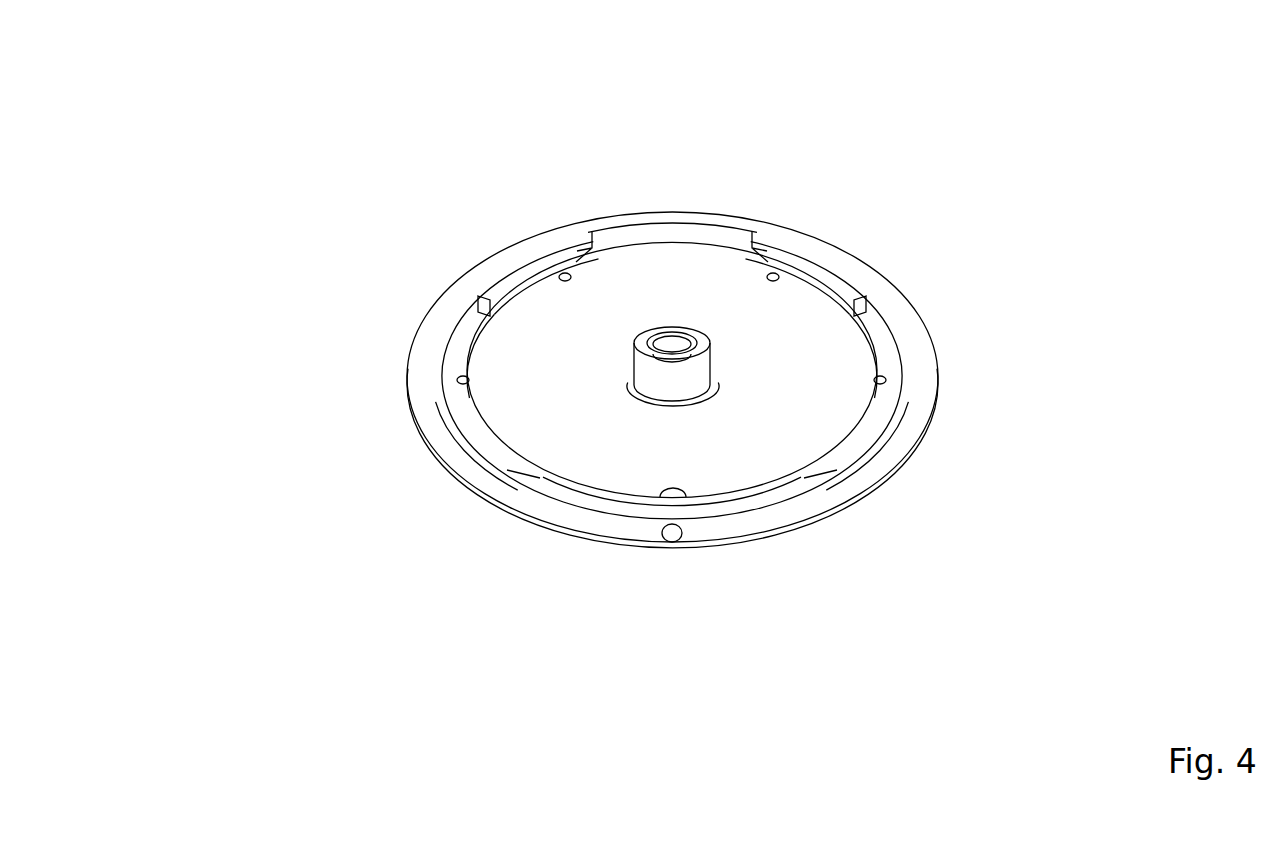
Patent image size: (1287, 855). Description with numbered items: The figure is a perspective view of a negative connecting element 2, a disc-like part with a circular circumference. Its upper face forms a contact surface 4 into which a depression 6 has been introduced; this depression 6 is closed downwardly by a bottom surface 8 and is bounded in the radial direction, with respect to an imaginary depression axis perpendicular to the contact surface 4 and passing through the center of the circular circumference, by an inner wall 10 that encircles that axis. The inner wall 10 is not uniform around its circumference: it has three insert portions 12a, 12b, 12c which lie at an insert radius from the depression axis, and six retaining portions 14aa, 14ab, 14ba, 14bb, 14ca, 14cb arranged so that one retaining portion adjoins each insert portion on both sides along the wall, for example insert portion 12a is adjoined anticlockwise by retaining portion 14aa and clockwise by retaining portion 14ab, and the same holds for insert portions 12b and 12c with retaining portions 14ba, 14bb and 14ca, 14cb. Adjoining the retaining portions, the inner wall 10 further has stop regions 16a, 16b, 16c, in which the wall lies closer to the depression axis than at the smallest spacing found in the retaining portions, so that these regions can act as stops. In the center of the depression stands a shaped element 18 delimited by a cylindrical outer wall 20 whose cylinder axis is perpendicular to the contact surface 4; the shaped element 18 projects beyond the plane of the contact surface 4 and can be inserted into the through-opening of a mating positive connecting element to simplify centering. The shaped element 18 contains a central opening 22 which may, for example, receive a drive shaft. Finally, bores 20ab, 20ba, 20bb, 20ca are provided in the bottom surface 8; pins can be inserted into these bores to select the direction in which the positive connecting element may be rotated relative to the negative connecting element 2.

The negative connecting element 2 is at (870, 497).
The contact surface 4 is at (913, 328).
The depression 6 is at (778, 447).
The bottom surface 8 is at (713, 470).
The inner wall 10 is at (660, 228).
The insert portion 12a is at (463, 441).
The insert portion 12b is at (622, 233).
The insert portion 12c is at (878, 443).
The retaining portion 14aa is at (572, 483).
The retaining portion 14ab is at (445, 343).
The retaining portion 14ba is at (505, 262).
The retaining portion 14bb is at (815, 268).
The retaining portion 14ca is at (905, 358).
The retaining portion 14cb is at (762, 488).
The stop region 16a is at (670, 490).
The stop region 16b is at (478, 297).
The stop region 16c is at (862, 302).
The shaped element 18 is at (640, 375).
The cylindrical outer wall 20 is at (688, 380).
The bore 20ab is at (460, 380).
The bore 20ba is at (565, 272).
The bore 20bb is at (773, 272).
The bore 20ca is at (880, 385).
The central opening 22 is at (672, 342).